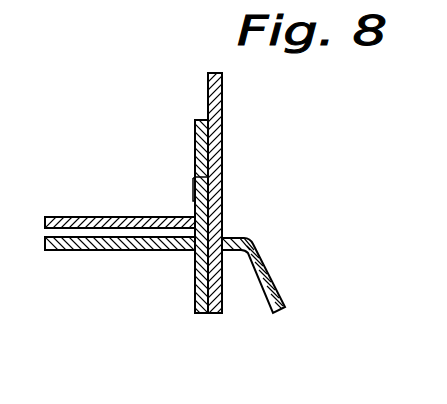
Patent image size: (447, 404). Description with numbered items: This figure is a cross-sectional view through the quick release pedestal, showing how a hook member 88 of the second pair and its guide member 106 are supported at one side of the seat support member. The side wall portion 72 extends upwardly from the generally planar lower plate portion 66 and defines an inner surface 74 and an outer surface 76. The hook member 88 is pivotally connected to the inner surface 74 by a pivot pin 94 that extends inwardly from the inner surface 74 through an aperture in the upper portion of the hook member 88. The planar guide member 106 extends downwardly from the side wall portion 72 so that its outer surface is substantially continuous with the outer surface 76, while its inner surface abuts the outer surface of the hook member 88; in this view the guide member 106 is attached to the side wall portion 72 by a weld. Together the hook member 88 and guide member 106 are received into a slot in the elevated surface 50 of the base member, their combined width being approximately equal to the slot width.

The elevated surface 50 is at (92, 250).
The lower plate portion 66 is at (70, 216).
The side wall portion 72 is at (208, 77).
The inner surface 74 is at (208, 101).
The outer surface 76 is at (222, 105).
The hook member 88 is at (196, 313).
The pivot pin 94 is at (195, 180).
The guide member 106 is at (223, 288).